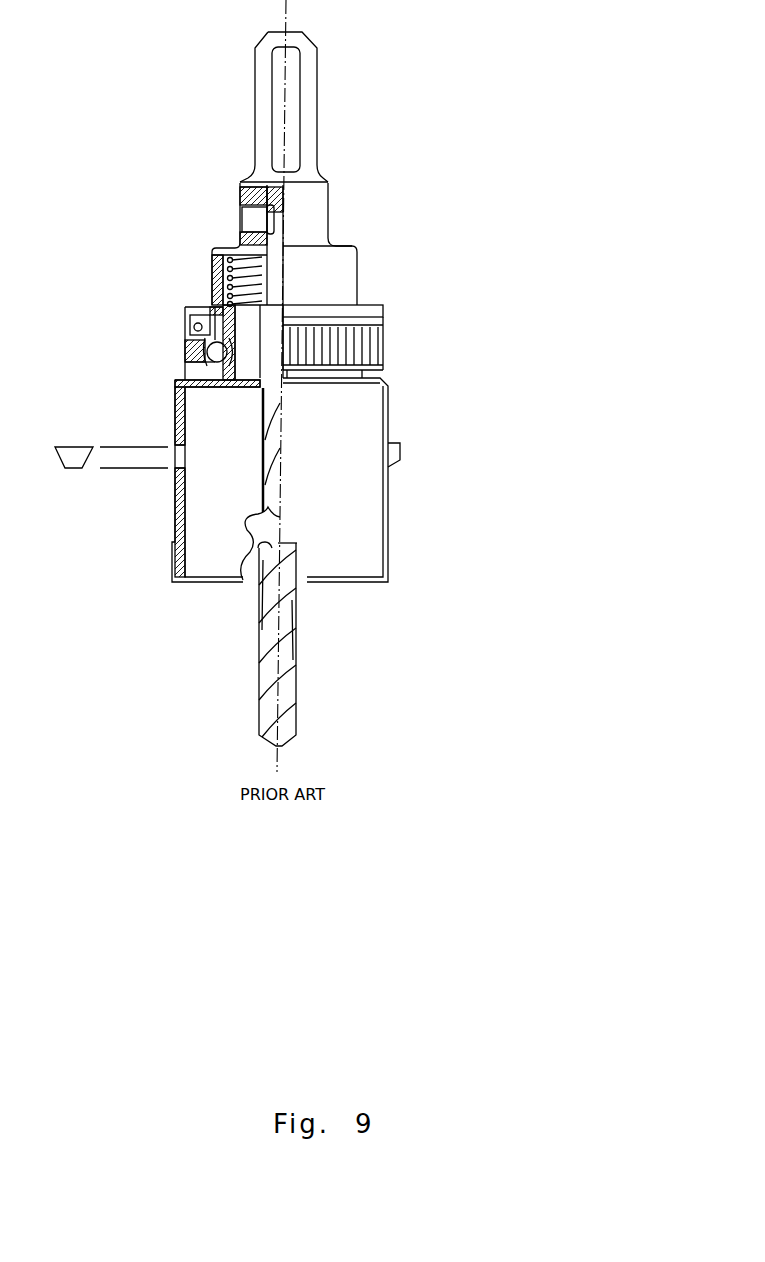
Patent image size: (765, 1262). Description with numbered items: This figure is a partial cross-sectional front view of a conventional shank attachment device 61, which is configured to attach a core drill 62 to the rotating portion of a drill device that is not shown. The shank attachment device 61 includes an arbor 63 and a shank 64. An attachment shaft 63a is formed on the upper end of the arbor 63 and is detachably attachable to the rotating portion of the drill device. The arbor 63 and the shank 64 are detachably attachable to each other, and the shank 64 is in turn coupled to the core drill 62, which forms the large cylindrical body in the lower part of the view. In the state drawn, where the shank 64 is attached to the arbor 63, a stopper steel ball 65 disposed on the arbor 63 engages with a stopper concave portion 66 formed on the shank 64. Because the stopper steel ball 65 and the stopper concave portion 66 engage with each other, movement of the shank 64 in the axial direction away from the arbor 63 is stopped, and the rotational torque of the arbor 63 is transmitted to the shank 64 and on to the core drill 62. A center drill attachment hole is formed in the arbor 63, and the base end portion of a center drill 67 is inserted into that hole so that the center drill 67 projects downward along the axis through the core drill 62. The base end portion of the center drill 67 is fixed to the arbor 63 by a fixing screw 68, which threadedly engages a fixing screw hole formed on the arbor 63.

The shank attachment device 61 is at (190, 153).
The core drill 62 is at (376, 398).
The arbor 63 is at (344, 273).
The attachment shaft 63a is at (314, 118).
The shank 64 is at (246, 328).
The stopper steel ball 65 is at (210, 357).
The stopper concave portion 66 is at (226, 365).
The center drill 67 is at (288, 728).
The fixing screw 68 is at (252, 217).